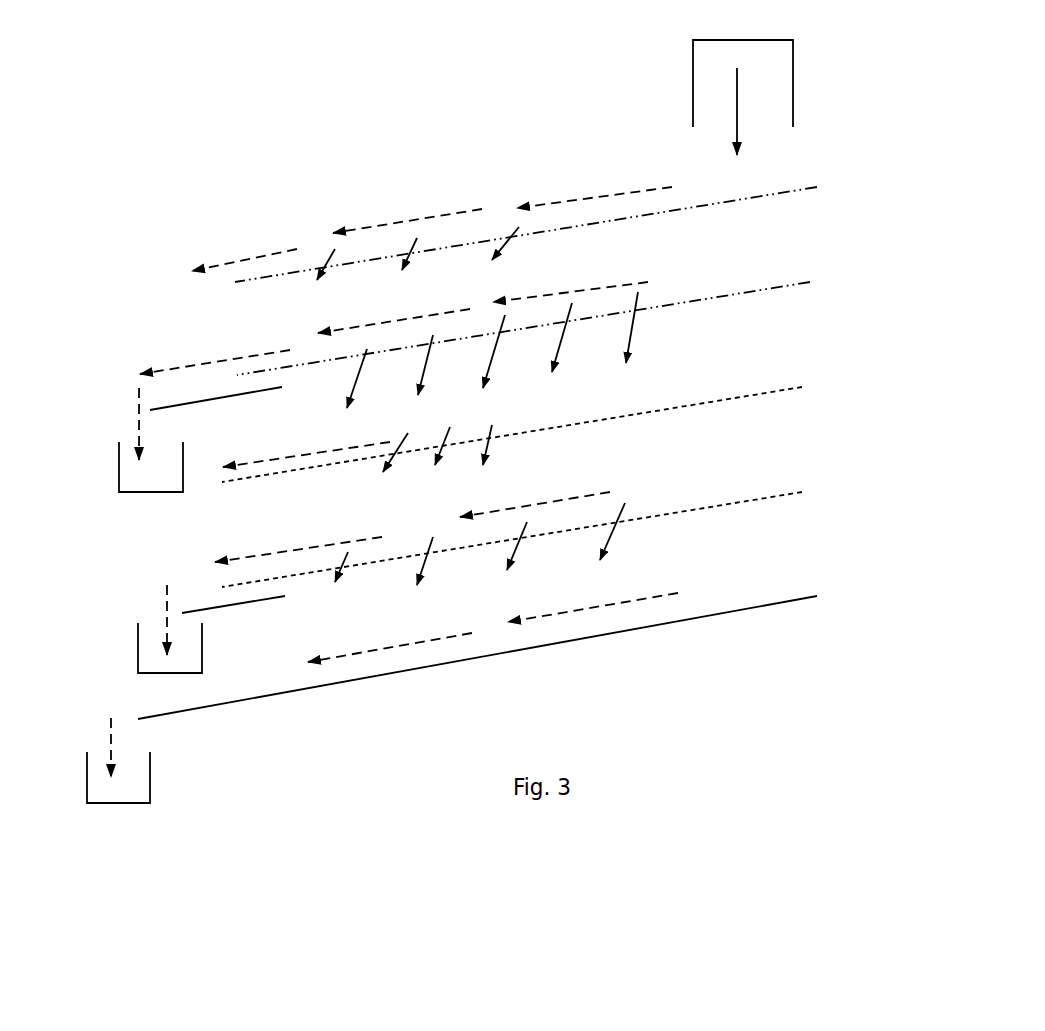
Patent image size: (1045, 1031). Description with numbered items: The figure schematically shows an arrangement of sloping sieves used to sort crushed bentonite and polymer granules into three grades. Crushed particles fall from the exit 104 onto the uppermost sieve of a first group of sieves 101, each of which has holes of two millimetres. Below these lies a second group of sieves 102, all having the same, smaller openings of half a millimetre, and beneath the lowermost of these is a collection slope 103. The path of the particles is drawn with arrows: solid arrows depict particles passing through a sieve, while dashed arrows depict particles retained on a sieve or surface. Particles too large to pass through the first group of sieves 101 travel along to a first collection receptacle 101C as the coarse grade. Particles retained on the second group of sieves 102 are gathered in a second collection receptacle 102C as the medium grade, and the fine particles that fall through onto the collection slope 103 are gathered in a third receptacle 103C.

The exit 104 is at (693, 88).
The first group of sieves 101 is at (737, 200).
The second group of sieves 102 is at (775, 397).
The collection slope 103 is at (748, 613).
The first collection receptacle 101C is at (118, 492).
The second collection receptacle 102C is at (138, 632).
The third receptacle 103C is at (130, 803).